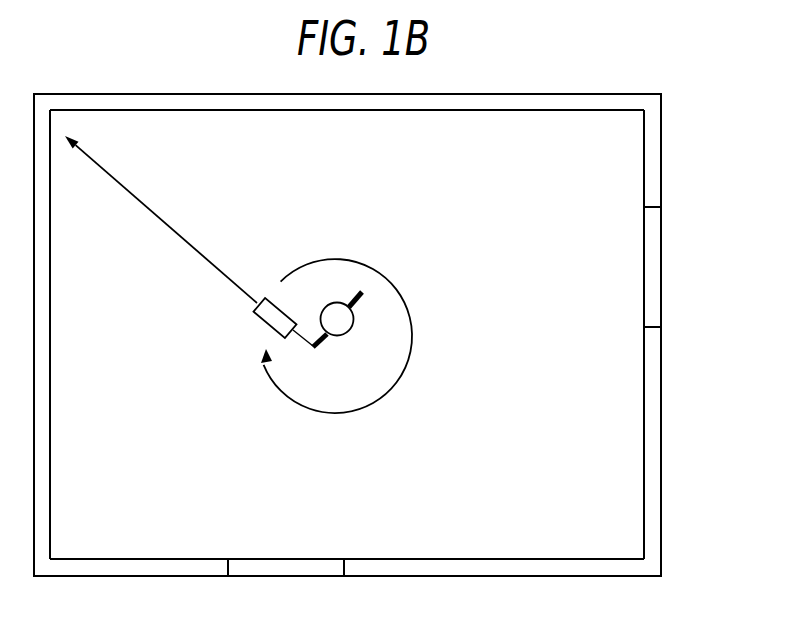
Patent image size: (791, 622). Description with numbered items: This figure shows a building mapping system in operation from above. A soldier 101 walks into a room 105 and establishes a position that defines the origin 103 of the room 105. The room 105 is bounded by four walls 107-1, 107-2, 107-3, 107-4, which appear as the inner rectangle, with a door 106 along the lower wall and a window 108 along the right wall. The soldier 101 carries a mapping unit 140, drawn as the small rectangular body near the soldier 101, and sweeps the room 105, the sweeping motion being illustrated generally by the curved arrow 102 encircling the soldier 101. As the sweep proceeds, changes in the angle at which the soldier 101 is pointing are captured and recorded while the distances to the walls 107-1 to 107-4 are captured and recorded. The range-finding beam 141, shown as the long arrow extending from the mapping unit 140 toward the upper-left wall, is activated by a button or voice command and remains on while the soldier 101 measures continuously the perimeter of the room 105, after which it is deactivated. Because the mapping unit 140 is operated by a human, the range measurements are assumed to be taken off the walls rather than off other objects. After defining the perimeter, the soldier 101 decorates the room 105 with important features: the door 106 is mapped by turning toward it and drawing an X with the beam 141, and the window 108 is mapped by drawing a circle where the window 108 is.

The soldier 101 is at (354, 319).
The arrow illustrating sweep 102 is at (397, 387).
The origin 103 is at (335, 362).
The room 105 is at (325, 93).
The door 106 is at (285, 578).
The wall 107-1 is at (50, 453).
The wall 107-2 is at (515, 111).
The wall 107-3 is at (651, 431).
The wall 107-4 is at (466, 559).
The window 108 is at (661, 263).
The mapping unit 140 is at (262, 321).
The range-finding beam 141 is at (200, 247).